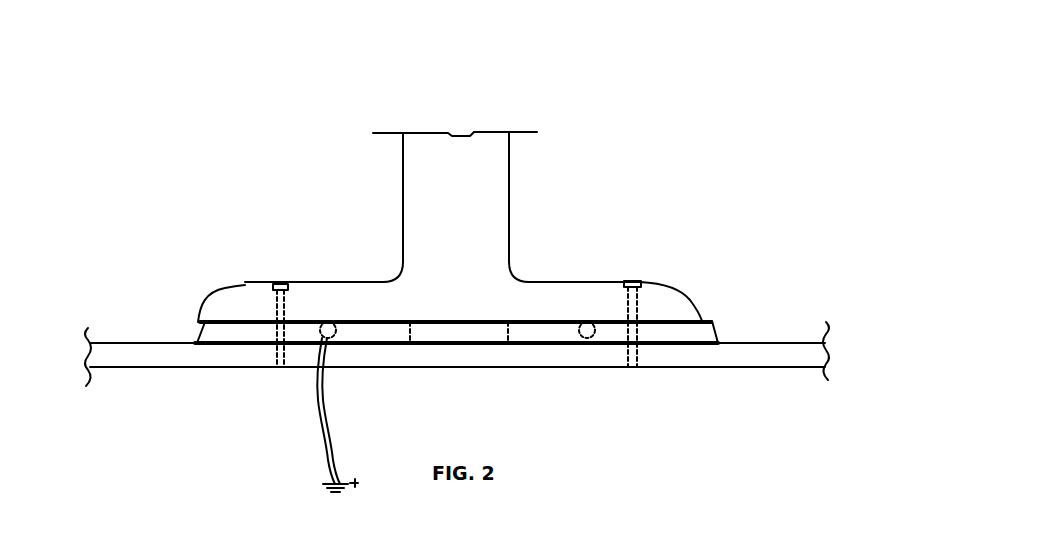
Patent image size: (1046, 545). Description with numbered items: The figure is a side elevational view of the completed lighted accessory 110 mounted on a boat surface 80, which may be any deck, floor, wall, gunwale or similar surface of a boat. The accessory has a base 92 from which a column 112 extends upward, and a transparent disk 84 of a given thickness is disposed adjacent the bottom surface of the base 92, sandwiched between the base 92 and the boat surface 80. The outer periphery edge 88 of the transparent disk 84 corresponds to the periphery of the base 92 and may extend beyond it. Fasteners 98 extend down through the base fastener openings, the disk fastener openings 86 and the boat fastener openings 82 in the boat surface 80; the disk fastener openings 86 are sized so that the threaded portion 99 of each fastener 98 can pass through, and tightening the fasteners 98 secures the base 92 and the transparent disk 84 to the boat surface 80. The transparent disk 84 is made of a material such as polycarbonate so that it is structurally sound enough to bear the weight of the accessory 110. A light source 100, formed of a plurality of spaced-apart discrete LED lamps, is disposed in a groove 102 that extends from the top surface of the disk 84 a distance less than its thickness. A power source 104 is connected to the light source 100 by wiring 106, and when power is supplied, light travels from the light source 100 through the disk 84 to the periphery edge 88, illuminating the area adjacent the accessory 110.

The boat surface 80 is at (146, 360).
The boat fastener openings 82 is at (287, 358).
The transparent disk 84 is at (537, 337).
The disk fastener openings 86 is at (277, 337).
The outer periphery edge 88 is at (713, 320).
The base 92 is at (660, 320).
The fasteners 98 is at (276, 276).
The threaded portion 99 is at (277, 303).
The light source 100 is at (329, 324).
The groove 102 is at (340, 331).
The power source 104 is at (337, 500).
The wires 106 is at (505, 338).
The lighted accessory 110 is at (647, 111).
The column 112 is at (450, 170).